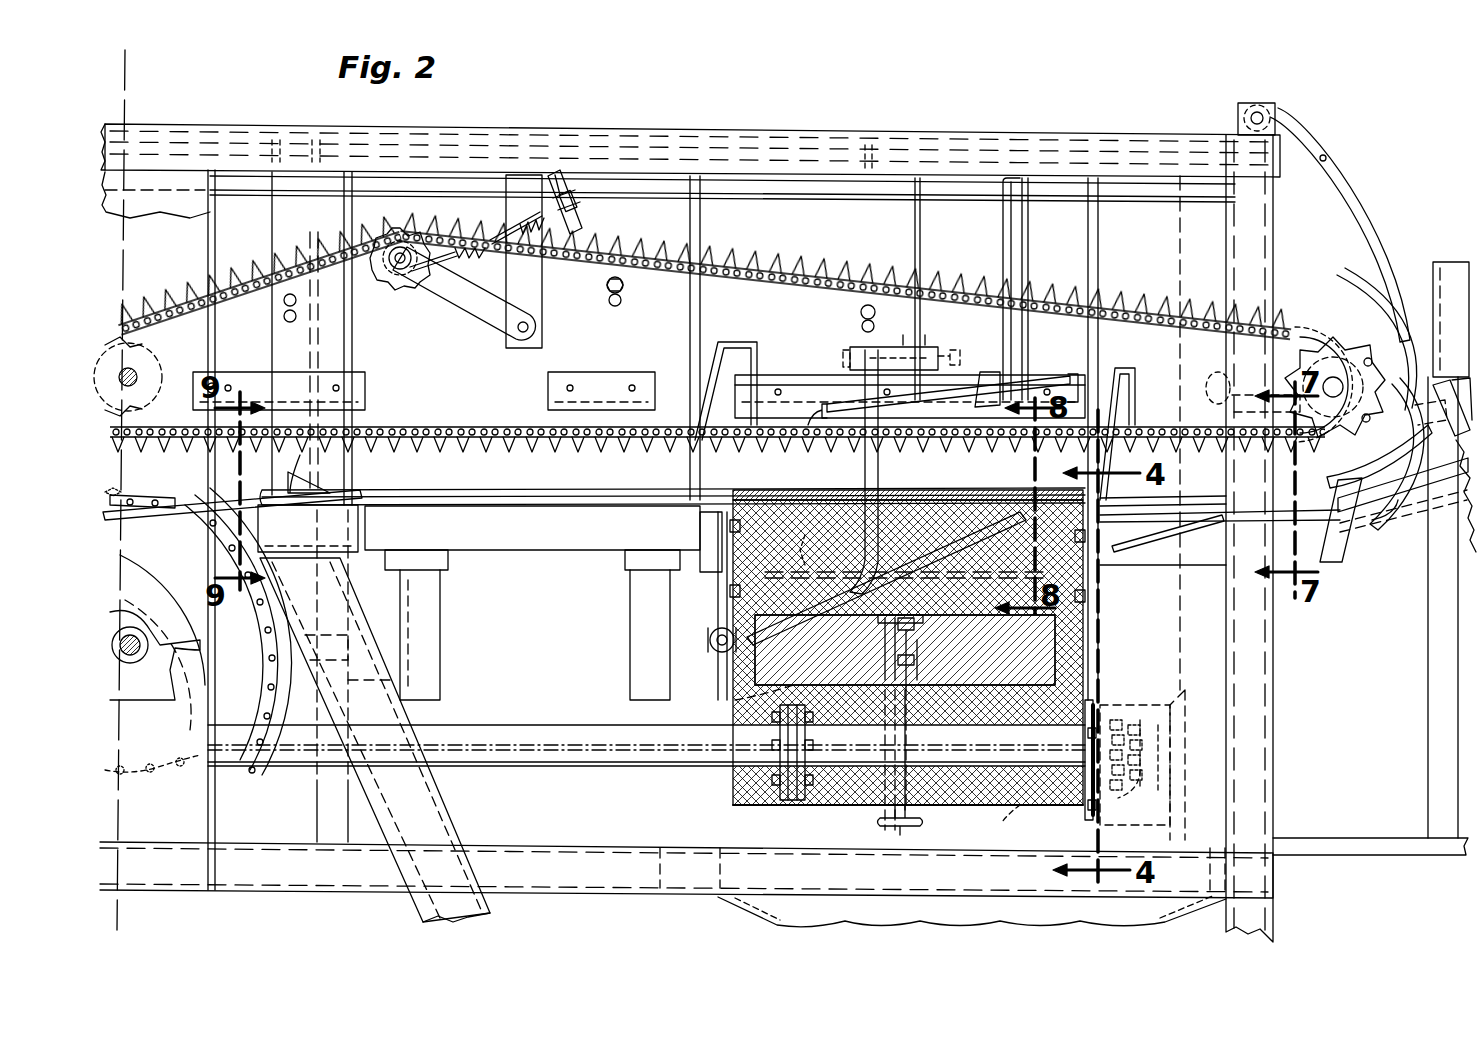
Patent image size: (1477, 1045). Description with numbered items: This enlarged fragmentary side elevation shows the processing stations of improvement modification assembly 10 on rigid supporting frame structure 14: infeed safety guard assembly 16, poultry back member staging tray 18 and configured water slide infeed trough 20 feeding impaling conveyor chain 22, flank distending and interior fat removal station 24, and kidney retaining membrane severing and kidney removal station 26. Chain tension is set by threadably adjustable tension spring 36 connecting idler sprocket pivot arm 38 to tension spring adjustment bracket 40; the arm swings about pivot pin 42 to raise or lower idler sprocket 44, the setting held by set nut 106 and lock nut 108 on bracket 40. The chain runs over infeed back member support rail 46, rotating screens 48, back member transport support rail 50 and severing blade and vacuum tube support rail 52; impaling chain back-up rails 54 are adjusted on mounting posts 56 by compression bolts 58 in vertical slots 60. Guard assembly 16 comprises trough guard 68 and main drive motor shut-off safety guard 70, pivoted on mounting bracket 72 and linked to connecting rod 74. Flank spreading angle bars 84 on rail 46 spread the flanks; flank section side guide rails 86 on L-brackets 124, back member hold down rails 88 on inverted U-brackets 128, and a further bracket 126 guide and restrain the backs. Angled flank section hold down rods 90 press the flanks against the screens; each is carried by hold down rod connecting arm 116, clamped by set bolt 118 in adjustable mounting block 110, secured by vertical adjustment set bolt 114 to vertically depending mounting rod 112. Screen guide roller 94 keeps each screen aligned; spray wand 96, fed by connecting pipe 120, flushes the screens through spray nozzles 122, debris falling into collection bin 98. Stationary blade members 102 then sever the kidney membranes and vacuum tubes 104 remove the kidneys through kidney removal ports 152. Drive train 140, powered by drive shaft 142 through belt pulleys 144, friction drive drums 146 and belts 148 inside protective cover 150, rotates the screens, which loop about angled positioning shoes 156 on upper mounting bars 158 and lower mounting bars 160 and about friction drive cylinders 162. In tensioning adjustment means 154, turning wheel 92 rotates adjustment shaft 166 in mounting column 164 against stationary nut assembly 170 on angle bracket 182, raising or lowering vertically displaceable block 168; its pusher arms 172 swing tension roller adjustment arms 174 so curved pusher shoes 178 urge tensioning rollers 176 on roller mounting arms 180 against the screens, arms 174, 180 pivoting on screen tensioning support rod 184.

The improvement modification assembly 10 is at (873, 96).
The rigid supporting frame structure 14 is at (642, 904).
The infeed safety guard assembly 16 is at (1380, 176).
The poultry back member staging tray 18 is at (1455, 262).
The configured water slide infeed trough 20 is at (1455, 545).
The impaling conveyor chain 22 is at (448, 412).
The poultry back member flank distending and interior fat removal station 24 is at (1200, 585).
The kidney retaining membrane severing and kidney removal station 26 is at (505, 638).
The threadably adjustable tension spring 36 is at (528, 198).
The idler sprocket pivot arm 38 is at (448, 300).
The tension spring adjustment bracket 40 is at (556, 176).
The pivot pin 42 is at (511, 330).
The idler sprocket 44 is at (396, 282).
The infeed back member support rail 46 is at (1150, 558).
The rotating screens 48 is at (862, 790).
The back member transport support rail 50 is at (515, 550).
The severing blade and vacuum tube support rail 52 is at (198, 631).
The impaling chain back-up rails 54 is at (365, 398).
The mounting posts 56 is at (272, 230).
The compression bolts 58 is at (284, 300).
The vertical slots 60 is at (284, 320).
The trough guard 68 is at (1408, 530).
The main drive motor shut-off safety guard 70 is at (1378, 228).
The mounting bracket 72 is at (1272, 104).
The connecting rod 74 is at (690, 140).
The flank spreading angle bars 84 is at (1212, 528).
The flank section side guide rails 86 is at (430, 492).
The back member hold down rails 88 is at (1106, 420).
The angled flank section hold down rods 90 is at (935, 500).
The wheel 92 is at (880, 826).
The screen guide roller 94 is at (718, 630).
The spray wand 96 is at (962, 430).
The collection bin 98 is at (740, 910).
The triangular shaped angularly positioned stationary blade members 102 is at (292, 478).
The vacuum tubes 104 is at (452, 812).
The set nut 106 is at (566, 190).
The lock nut 108 is at (575, 220).
The adjustable mounting block 110 is at (922, 330).
The vertically depending mounting rod 112 is at (920, 236).
The vertical adjustment set bolt 114 is at (960, 355).
The hold down rod connecting arm 116 is at (866, 470).
The set bolt 118 is at (850, 356).
The connecting pipe 120 is at (1011, 236).
The spray nozzles 122 is at (1068, 380).
The L-brackets 124 is at (700, 222).
The hook bracket 126 is at (722, 342).
The inverted U-brackets 128 is at (440, 628).
The rotating screen drive train 140 is at (1190, 754).
The drive shaft 142 is at (655, 770).
The belt pulleys 144 is at (1145, 730).
The rotating screen friction drive drums 146 is at (1028, 823).
The belts 148 is at (1150, 720).
The protective cover 150 is at (1140, 668).
The kidney removal ports 152 is at (215, 482).
The rotating screen tensioning adjustment means 154 is at (866, 818).
The angled positioning shoes 156 is at (705, 552).
The upper mounting bars 158 is at (670, 510).
The lower mounting bars 160 is at (732, 612).
The rotating screen friction drive cylinders 162 is at (780, 808).
The rotating screen tensioning adjustment means mounting column 164 is at (878, 738).
The rotating screen tensioning adjustment shaft 166 is at (912, 818).
The vertically displaceable block 168 is at (915, 660).
The stationary nut screwing elevation and depression assembly 170 is at (915, 624).
The variably angled pusher arms 172 is at (925, 645).
The pivotally angled rotating screen tension roller adjustment arms 174 is at (930, 570).
The rotating screen tensioning rollers 176 is at (740, 700).
The rotating screen tensioning roller curved pusher shoes 178 is at (735, 730).
The rotating screen tensioning roller mounting arms 180 is at (735, 668).
The angle bracket 182 is at (935, 596).
The screen tensioning support rod 184 is at (801, 539).